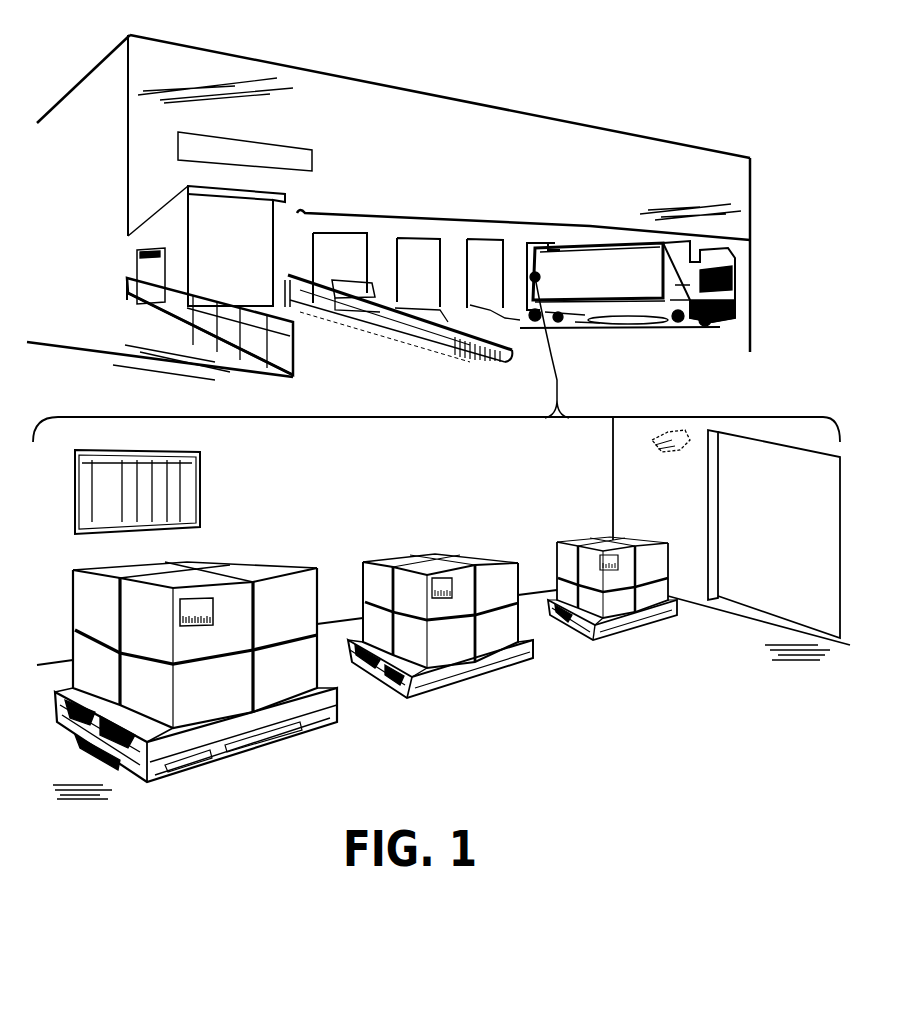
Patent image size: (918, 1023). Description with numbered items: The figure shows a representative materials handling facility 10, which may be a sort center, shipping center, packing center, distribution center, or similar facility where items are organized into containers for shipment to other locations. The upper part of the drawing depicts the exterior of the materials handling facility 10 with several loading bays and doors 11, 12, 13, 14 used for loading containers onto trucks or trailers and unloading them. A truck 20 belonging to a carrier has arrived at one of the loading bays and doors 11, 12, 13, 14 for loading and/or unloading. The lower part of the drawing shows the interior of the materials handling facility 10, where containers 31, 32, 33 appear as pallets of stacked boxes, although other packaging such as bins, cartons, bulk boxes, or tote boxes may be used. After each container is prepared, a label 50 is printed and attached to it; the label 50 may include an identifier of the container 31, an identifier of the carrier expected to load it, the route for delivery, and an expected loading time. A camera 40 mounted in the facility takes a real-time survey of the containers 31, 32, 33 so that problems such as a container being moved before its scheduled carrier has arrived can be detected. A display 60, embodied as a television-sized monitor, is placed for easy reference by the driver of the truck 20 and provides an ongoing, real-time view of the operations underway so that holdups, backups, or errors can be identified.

The materials handling facility 10 is at (97, 20).
The loading bay and door 11 is at (350, 234).
The loading bay and door 12 is at (417, 238).
The loading bay and door 13 is at (491, 240).
The loading bay and door 14 is at (556, 243).
The truck 20 is at (737, 277).
The container 31 is at (297, 586).
The container 32 is at (503, 580).
The container 33 is at (650, 563).
The camera 40 is at (680, 430).
The label 50 is at (200, 625).
The display 60 is at (75, 513).